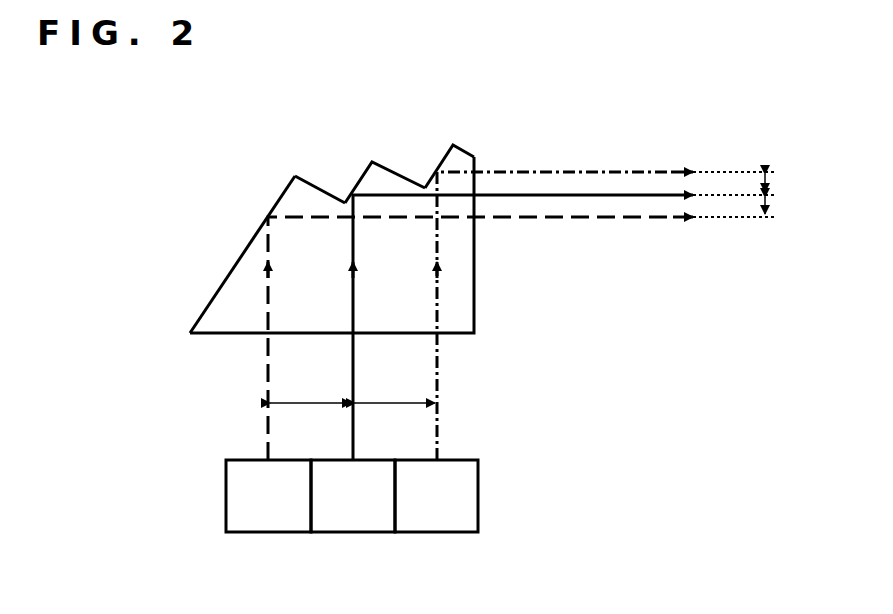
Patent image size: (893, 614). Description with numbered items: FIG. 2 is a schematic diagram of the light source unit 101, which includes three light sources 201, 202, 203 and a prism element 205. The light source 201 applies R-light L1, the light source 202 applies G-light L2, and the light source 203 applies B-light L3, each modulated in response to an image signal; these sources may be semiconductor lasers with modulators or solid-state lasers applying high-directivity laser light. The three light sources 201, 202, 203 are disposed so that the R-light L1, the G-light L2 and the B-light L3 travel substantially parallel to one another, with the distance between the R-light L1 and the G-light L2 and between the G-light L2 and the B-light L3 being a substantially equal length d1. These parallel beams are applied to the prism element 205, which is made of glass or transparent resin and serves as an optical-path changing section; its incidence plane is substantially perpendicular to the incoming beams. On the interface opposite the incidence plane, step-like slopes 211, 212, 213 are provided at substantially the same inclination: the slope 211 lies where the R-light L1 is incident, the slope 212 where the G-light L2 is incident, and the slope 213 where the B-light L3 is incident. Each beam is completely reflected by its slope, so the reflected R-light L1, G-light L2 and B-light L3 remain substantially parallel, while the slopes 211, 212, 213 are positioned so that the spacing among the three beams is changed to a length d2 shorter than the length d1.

The light source unit 101 is at (359, 206).
The prism element 205 is at (213, 301).
The slope 213 is at (284, 189).
The slope 212 is at (361, 176).
The slope 211 is at (439, 163).
The light source 201 is at (437, 533).
The light source 202 is at (353, 533).
The light source 203 is at (272, 533).
The R-light L1 is at (439, 427).
The G-light L2 is at (355, 357).
The B-light L3 is at (264, 427).
The length d1 is at (352, 391).
The length d2 is at (770, 207).